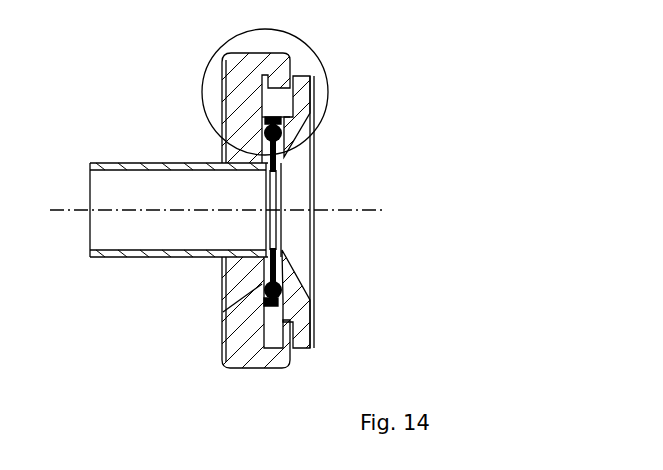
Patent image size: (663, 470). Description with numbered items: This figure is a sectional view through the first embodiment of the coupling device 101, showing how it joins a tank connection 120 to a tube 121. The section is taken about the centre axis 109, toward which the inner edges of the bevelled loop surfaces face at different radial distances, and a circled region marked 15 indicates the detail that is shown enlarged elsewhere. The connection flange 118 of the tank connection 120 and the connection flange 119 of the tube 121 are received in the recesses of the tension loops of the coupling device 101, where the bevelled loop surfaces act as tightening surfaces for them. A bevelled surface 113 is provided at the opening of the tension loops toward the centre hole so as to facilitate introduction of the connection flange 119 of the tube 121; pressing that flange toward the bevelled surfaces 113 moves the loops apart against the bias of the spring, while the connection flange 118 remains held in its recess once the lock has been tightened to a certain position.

The detail circle for FIG. 15 is at (228, 38).
The coupling device 101 is at (251, 376).
The centre axis 109 is at (322, 212).
The bevelled surface 113 is at (238, 282).
The connection flange 118 is at (305, 88).
The connection flange 119 is at (262, 122).
The tank connection 120 is at (302, 52).
The tube 121 is at (93, 256).